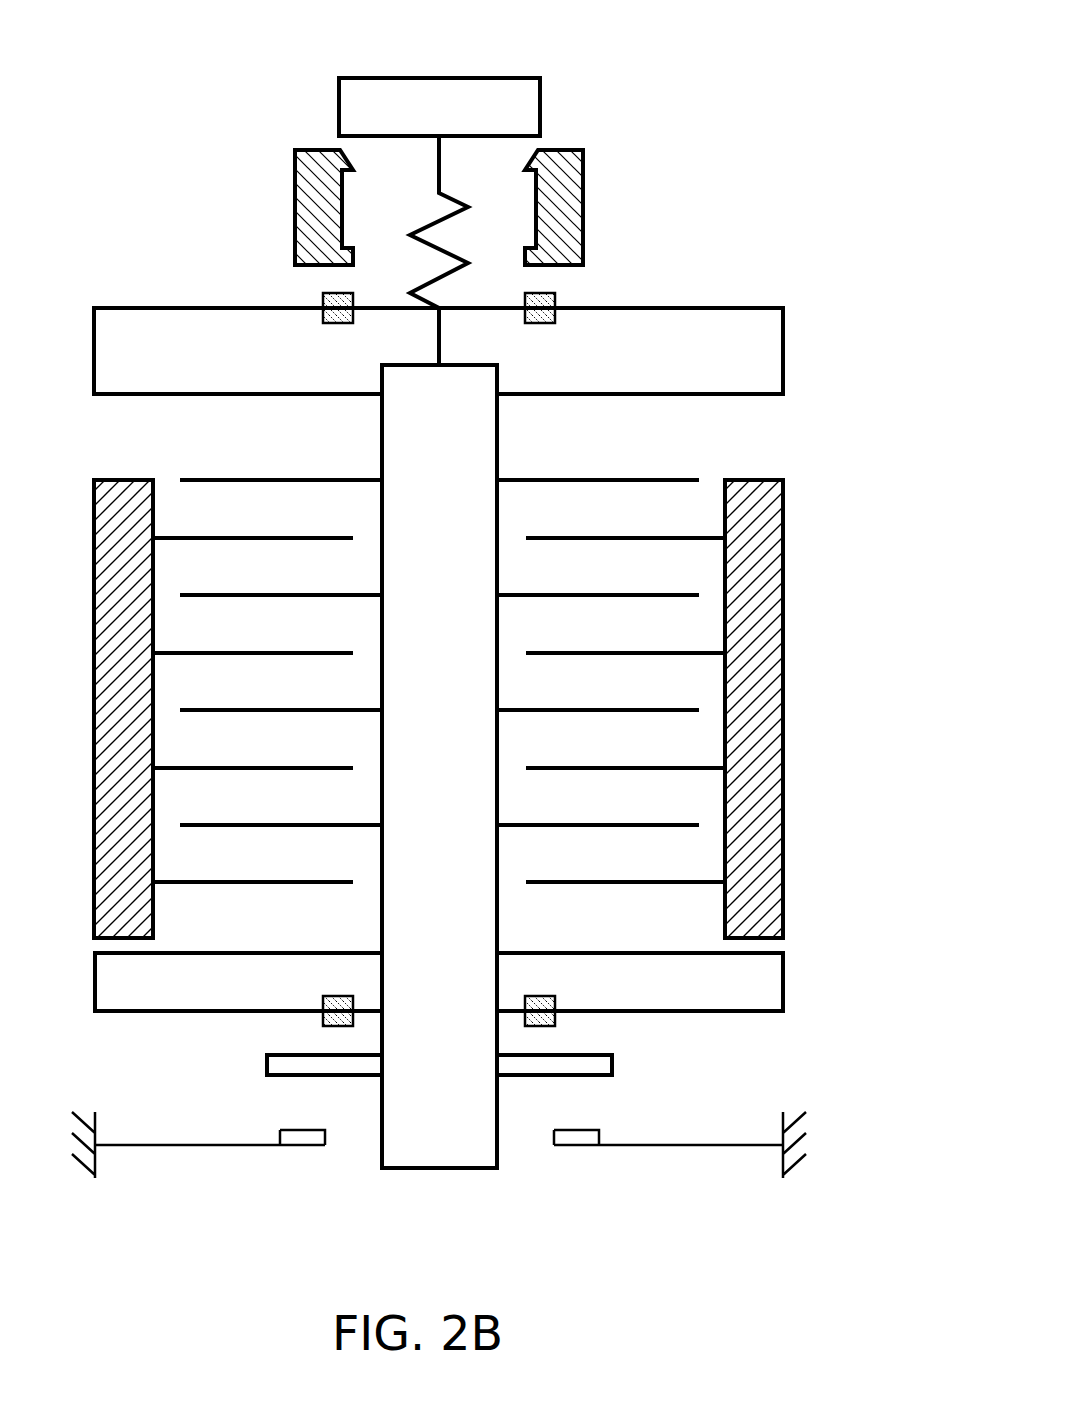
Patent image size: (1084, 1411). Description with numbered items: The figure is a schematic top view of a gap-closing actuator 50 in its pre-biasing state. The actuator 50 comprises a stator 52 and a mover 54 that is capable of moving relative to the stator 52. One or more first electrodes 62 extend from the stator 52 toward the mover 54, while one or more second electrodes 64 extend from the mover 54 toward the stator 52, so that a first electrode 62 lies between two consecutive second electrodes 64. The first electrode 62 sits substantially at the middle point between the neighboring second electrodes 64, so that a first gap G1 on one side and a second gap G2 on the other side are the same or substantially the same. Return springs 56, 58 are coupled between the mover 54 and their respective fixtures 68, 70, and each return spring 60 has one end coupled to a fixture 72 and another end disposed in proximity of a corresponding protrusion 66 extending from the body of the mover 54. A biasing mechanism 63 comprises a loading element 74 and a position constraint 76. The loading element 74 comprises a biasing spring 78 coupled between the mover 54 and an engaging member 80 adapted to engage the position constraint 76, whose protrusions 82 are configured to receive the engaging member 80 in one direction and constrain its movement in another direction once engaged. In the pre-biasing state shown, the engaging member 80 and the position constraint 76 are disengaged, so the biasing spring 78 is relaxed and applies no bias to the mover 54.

The gap-closing actuator 50 is at (762, 251).
The stator 52 is at (755, 558).
The mover 54 is at (447, 1145).
The return spring 56 is at (783, 350).
The return spring 58 is at (783, 983).
The return spring 60 is at (655, 1145).
The first electrode 62 is at (553, 538).
The biasing mechanism 63 is at (411, 175).
The second electrode 64 is at (592, 480).
The protrusion 66 is at (600, 1055).
The fixture 68 is at (540, 318).
The fixture 70 is at (326, 1022).
The fixture 72 is at (793, 1143).
The loading element 74 is at (482, 269).
The position constraint 76 is at (575, 200).
The biasing spring 78 is at (427, 283).
The engaging member 80 is at (497, 92).
The protrusion 82 is at (532, 163).
The first gap G1 is at (267, 545).
The second gap G2 is at (202, 602).